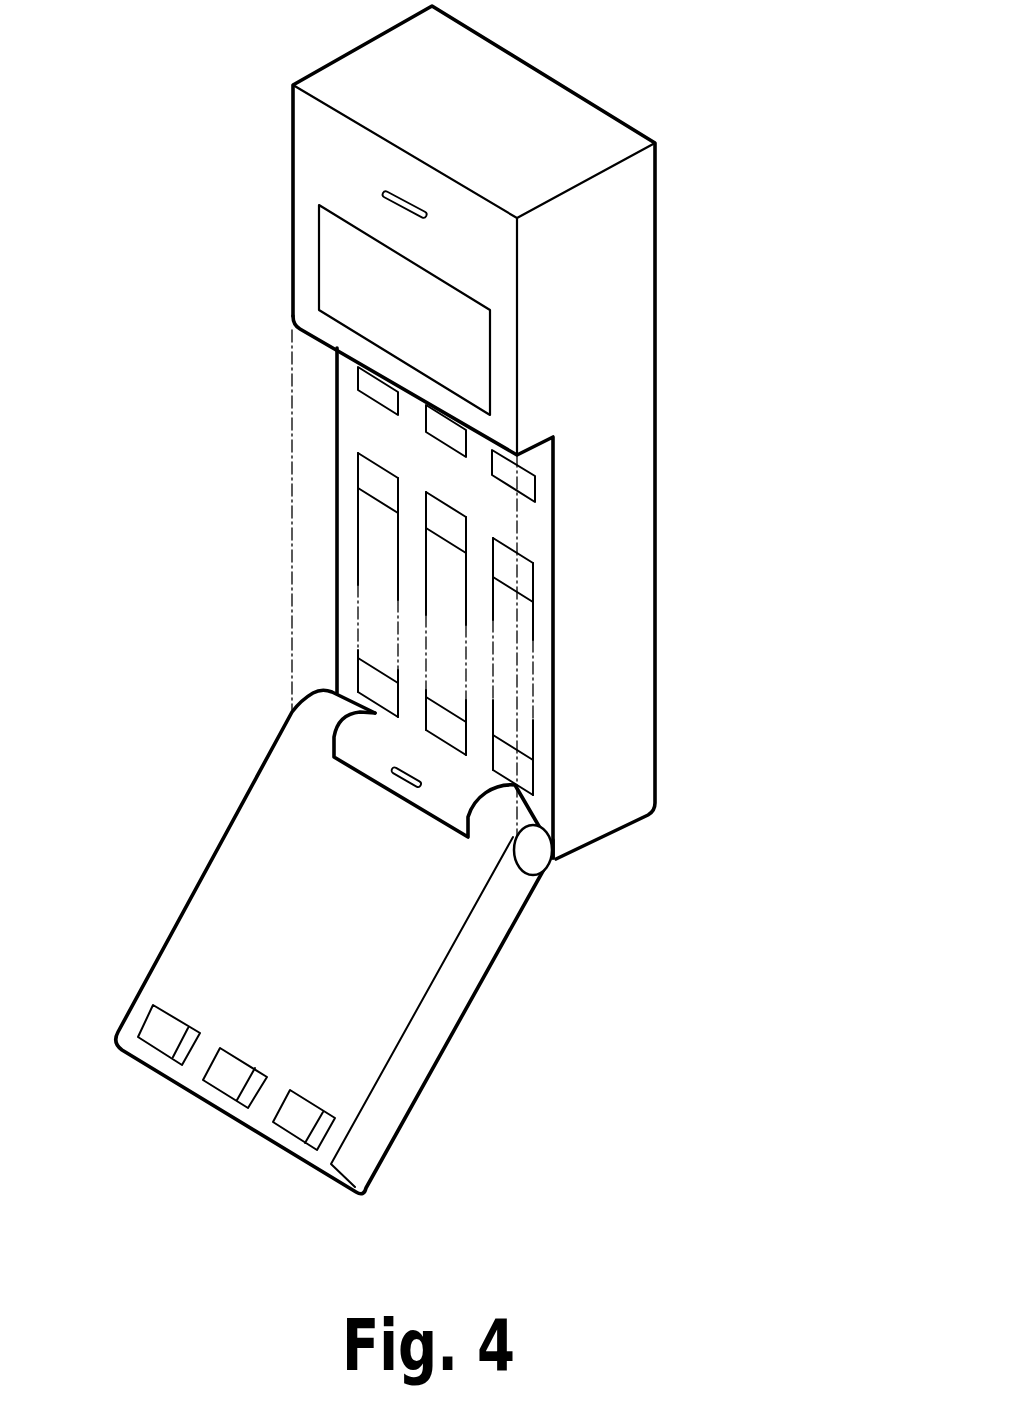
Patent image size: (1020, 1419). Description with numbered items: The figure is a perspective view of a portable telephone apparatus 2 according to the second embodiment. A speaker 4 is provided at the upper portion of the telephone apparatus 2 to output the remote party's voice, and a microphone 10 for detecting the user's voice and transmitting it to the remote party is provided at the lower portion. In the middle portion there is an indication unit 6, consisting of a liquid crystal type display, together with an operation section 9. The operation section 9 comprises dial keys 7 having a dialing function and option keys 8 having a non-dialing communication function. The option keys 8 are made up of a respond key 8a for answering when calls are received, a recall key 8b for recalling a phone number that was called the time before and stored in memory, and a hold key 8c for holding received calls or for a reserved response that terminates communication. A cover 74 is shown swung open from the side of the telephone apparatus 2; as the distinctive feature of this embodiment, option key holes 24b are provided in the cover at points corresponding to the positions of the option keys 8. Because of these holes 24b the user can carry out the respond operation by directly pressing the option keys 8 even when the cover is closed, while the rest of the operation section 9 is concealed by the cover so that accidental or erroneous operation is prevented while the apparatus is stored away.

The telephone apparatus 2 is at (498, 62).
The speaker 4 is at (380, 193).
The indication unit 6 is at (319, 262).
The option keys 8 is at (456, 423).
The respond key 8a is at (370, 382).
The recall key 8b is at (443, 427).
The hold key 8c is at (532, 477).
The dial keys 7 is at (533, 577).
The operation section 9 is at (312, 557).
The microphone 10 is at (367, 762).
The flip cover 74 is at (205, 912).
The option key holes 24b is at (175, 1052).